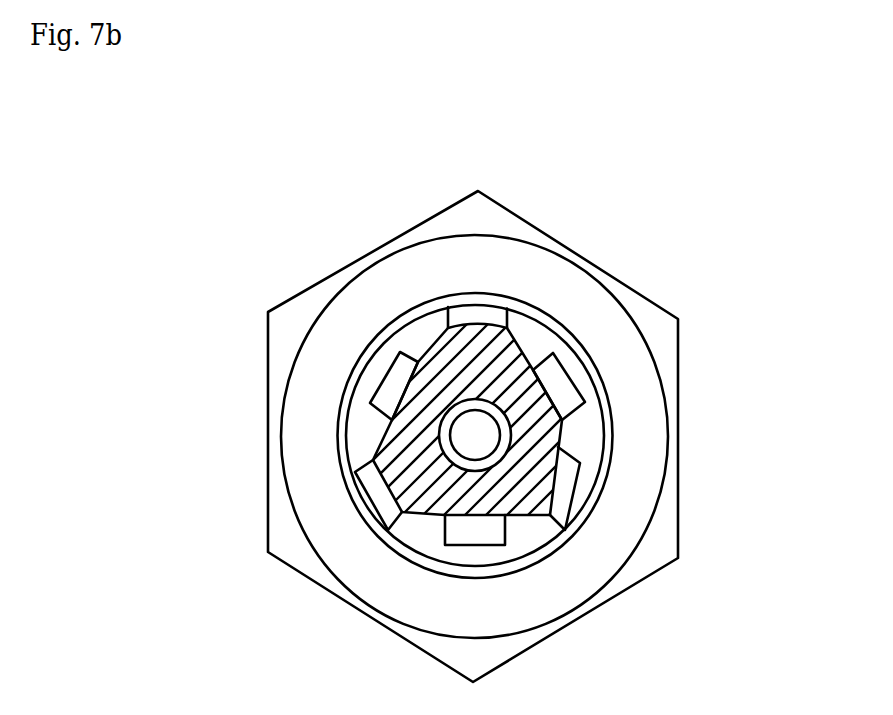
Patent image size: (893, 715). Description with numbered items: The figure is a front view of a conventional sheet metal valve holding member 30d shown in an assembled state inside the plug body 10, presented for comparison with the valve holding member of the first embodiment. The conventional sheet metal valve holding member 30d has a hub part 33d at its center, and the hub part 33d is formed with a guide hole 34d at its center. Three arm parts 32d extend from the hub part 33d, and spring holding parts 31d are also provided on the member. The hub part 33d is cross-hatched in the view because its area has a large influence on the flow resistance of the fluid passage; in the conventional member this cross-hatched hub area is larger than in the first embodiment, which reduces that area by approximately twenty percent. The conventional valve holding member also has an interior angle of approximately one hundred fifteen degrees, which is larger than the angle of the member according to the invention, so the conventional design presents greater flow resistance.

The plug body 10 is at (529, 223).
The conventional sheet metal valve holding member 30d is at (523, 347).
The spring holding parts 31d is at (572, 388).
The arm parts 32d is at (577, 492).
The hub part 33d is at (557, 445).
The guide hole 34d is at (461, 397).